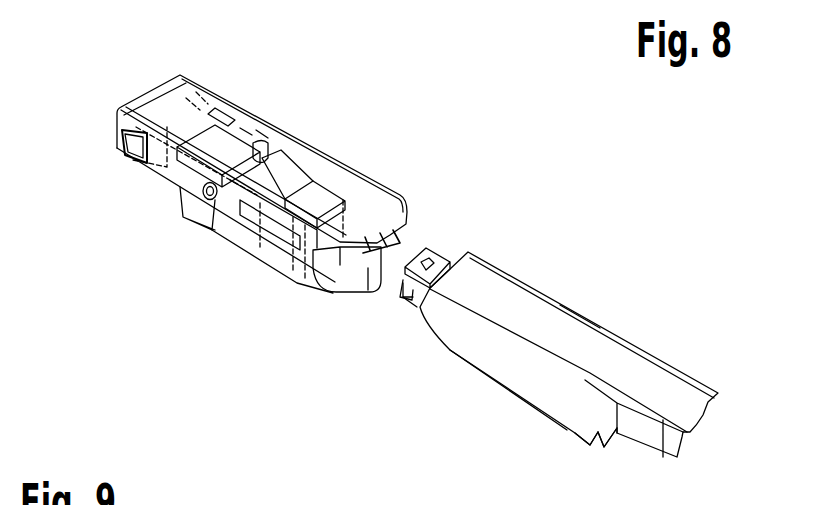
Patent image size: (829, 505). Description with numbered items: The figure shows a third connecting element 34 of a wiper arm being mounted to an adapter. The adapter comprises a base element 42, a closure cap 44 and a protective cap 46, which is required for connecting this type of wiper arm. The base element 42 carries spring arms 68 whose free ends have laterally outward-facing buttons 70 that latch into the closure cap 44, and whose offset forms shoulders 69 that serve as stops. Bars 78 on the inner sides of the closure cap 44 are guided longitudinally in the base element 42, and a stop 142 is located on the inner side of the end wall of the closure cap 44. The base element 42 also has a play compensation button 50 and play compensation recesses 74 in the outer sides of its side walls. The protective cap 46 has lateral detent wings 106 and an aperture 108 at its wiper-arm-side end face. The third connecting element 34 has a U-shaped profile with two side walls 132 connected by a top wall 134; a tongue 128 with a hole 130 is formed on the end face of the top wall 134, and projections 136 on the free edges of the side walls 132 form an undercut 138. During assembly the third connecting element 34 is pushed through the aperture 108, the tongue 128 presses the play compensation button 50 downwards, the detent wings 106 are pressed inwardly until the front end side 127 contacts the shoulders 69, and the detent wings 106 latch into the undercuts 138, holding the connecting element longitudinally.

The third connecting element 34 is at (650, 321).
The base element 42 is at (193, 238).
The closure cap 44 is at (136, 84).
The protective cap 46 is at (316, 120).
The play compensation button 50 is at (315, 193).
The spring arms 68 is at (222, 104).
The shoulders 69 is at (262, 116).
The buttons 70 is at (126, 152).
The play compensation recesses 74 is at (286, 242).
The bars 78 is at (192, 208).
The detent wings 106 is at (334, 280).
The aperture 108 is at (422, 220).
The front end side 127 is at (407, 305).
The tongue 128 is at (413, 300).
The hole 130 is at (445, 252).
The side walls 132 is at (499, 360).
The top wall 134 is at (562, 293).
The projections 136 is at (580, 442).
The undercut 138 is at (606, 448).
The stop 142 is at (166, 108).